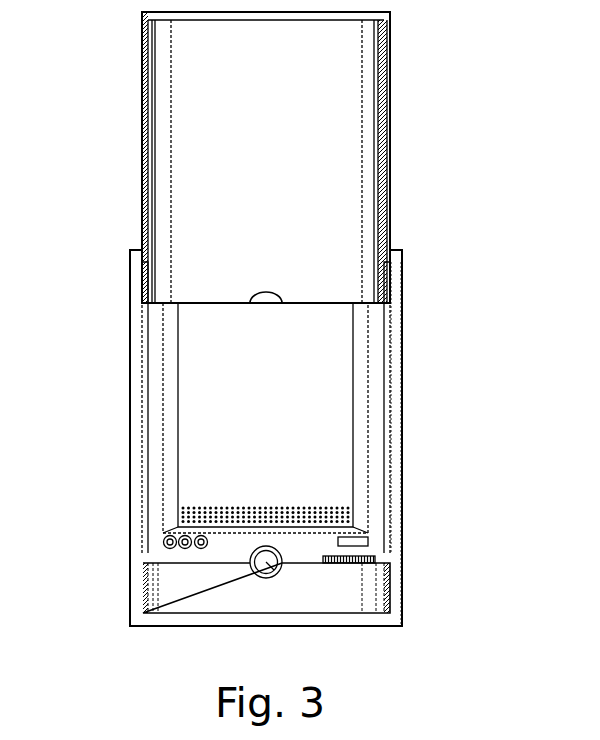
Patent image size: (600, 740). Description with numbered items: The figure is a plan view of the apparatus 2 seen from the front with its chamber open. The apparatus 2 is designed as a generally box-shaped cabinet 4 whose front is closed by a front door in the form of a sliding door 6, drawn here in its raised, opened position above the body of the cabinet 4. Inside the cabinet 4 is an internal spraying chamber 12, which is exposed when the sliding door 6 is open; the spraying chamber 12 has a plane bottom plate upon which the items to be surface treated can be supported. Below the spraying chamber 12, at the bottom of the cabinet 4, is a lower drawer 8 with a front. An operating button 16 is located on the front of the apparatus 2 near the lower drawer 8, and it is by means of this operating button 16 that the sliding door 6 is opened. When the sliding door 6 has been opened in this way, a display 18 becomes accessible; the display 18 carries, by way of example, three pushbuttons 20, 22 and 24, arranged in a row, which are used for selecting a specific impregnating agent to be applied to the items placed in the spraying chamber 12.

The apparatus 2 is at (408, 262).
The cabinet 4 is at (393, 403).
The sliding door 6 is at (274, 135).
The lower drawer 8 is at (350, 592).
The spraying chamber 12 is at (281, 428).
The operating button 16 is at (281, 572).
The display 18 is at (172, 550).
The pushbutton 20 is at (164, 541).
The pushbutton 22 is at (185, 549).
The pushbutton 24 is at (201, 549).